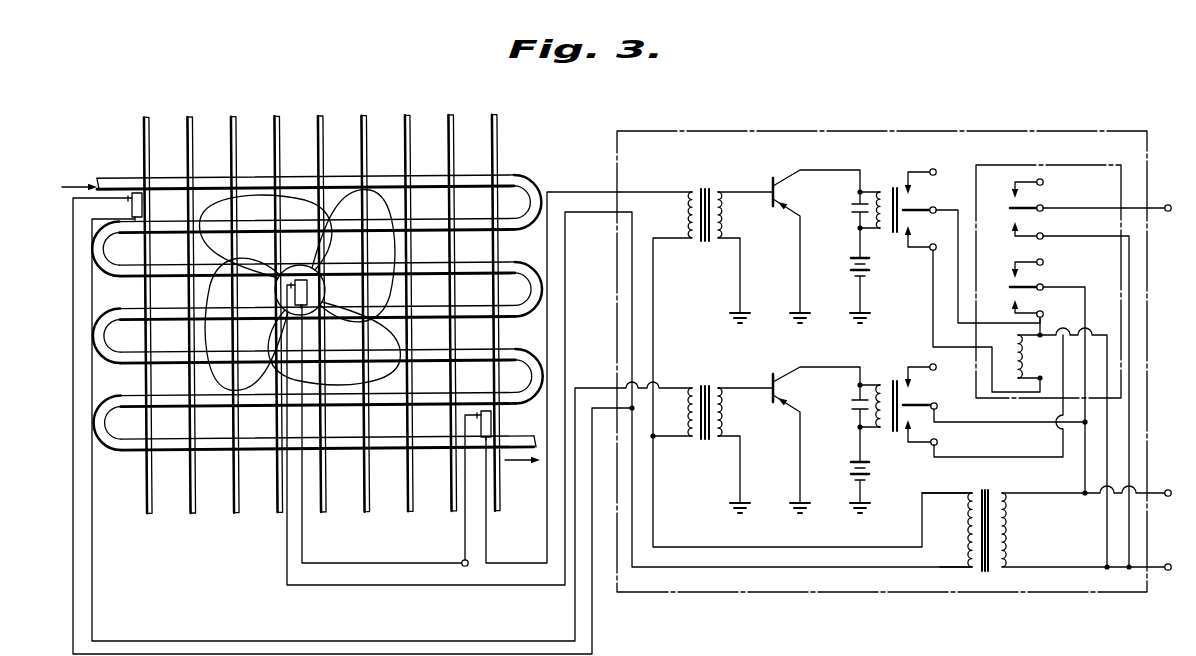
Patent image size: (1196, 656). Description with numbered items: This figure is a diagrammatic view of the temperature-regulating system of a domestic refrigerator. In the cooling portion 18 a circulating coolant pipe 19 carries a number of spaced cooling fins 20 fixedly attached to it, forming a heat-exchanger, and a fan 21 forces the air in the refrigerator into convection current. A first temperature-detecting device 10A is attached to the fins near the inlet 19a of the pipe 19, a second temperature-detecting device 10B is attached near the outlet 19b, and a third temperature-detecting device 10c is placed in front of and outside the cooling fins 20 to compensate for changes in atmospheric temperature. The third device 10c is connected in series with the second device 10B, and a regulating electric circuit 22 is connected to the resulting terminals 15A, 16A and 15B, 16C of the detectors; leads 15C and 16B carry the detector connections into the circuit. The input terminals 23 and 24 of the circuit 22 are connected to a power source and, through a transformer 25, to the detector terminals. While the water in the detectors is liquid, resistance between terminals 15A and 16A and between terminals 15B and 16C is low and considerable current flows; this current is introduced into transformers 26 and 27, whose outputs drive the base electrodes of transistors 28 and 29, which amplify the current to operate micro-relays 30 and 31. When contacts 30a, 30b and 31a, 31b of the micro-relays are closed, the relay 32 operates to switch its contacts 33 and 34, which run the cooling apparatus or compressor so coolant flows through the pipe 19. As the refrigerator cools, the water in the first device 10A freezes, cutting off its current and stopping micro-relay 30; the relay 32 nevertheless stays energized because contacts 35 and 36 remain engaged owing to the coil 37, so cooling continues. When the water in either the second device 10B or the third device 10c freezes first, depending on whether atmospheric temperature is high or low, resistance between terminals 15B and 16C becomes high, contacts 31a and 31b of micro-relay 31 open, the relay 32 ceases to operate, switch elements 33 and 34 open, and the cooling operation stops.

The first temperature-detecting device 10A is at (133, 195).
The second temperature-detecting device 10B is at (492, 420).
The third temperature-detecting device 10c is at (298, 279).
The terminal 15A is at (93, 515).
The terminal 15B is at (487, 505).
The sensor lead 15C is at (302, 500).
The terminal 16A is at (74, 565).
The sensor lead 16B is at (466, 500).
The terminal 16C is at (287, 535).
The cooling portion 18 is at (287, 126).
The circulating coolant pipe 19 is at (300, 176).
The inlet of the pipe 19a is at (99, 181).
The outlet of the pipe 19b is at (497, 455).
The cooling fins 20 is at (276, 122).
The fan 21 is at (355, 225).
The regulating electric circuit 22 is at (949, 129).
The input terminal 23 is at (1168, 496).
The input terminal 24 is at (1167, 571).
The transformer 25 is at (984, 580).
The transformer 26 is at (711, 437).
The transformer 27 is at (812, 356).
The transistor 28 is at (807, 430).
The transistor 29 is at (810, 235).
The micro-relay 30 is at (886, 377).
The contact of micro-relay 30 30a is at (927, 404).
The contact of micro-relay 30 30b is at (905, 440).
The micro-relay 31 is at (889, 182).
The contact of micro-relay 31 31a is at (926, 207).
The contact of micro-relay 31 31b is at (906, 232).
The relay 32 is at (1062, 160).
The contact (switch element) of relay 32 33 is at (1032, 205).
The contact (switch element) of relay 32 34 is at (1032, 238).
The contact of relay 32 35 is at (1035, 286).
The contact of relay 32 36 is at (1018, 311).
The coil 37 is at (1024, 352).